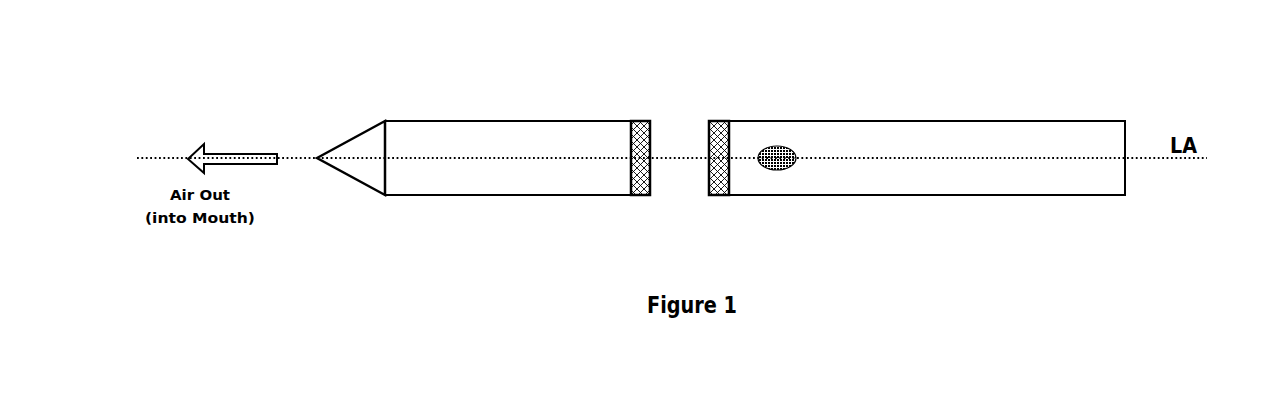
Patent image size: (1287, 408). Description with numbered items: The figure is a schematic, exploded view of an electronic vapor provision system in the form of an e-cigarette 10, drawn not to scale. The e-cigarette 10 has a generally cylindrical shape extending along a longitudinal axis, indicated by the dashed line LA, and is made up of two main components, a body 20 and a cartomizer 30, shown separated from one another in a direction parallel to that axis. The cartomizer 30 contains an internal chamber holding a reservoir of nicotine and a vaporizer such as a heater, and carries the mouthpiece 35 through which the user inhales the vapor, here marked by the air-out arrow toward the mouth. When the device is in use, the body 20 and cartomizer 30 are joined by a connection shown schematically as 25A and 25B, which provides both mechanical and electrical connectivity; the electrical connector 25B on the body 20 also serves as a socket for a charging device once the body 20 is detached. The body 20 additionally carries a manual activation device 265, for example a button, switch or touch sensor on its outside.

The e-cigarette 10 is at (316, 280).
The body 20 is at (949, 188).
The connection (cartomizer side) 25A is at (597, 188).
The electrical connector 25B is at (893, 122).
The cartomizer 30 is at (508, 134).
The mouthpiece 35 is at (311, 130).
The manual activation device 265 is at (833, 208).